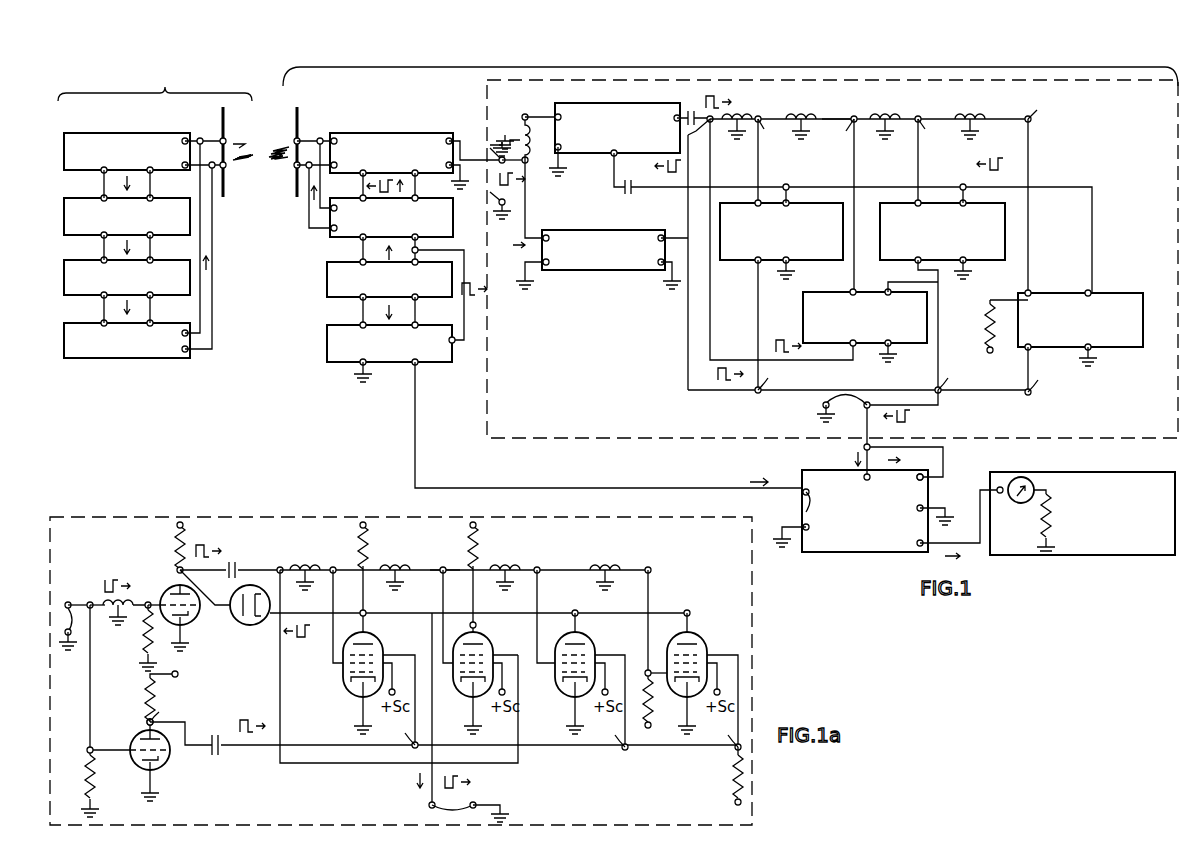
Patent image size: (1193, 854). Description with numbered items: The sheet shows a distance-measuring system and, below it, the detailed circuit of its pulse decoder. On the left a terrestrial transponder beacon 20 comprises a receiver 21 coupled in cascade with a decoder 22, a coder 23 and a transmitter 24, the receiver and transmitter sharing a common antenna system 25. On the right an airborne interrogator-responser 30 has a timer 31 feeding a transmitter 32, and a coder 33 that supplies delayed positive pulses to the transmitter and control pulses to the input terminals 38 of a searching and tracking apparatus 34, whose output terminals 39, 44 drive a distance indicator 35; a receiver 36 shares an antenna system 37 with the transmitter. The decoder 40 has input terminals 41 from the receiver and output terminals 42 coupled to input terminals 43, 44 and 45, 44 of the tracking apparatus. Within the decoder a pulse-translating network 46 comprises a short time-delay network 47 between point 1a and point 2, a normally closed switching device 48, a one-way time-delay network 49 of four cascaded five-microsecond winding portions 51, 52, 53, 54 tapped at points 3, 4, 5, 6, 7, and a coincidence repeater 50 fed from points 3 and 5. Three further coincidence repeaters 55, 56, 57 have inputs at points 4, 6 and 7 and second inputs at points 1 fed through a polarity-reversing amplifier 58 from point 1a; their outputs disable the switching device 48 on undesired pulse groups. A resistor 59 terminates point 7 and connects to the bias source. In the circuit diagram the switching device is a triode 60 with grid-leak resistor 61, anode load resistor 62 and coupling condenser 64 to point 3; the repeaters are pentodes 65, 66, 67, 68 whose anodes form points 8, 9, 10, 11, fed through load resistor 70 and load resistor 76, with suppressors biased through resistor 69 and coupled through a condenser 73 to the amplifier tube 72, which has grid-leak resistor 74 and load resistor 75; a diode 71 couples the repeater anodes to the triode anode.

In FIG. 1, the transponder beacon 20 is at (173, 202).
In FIG. 1, the receiver 21 is at (142, 132).
In FIG. 1, the decoder 22 is at (94, 198).
In FIG. 1, the coder 23 is at (94, 260).
In FIG. 1, the transmitter 24 is at (94, 323).
In FIG. 1, the antenna system 25 is at (226, 172).
In FIG. 1, the interrogator-responser 30 is at (730, 311).
In FIG. 1, the timer 31 is at (327, 278).
In FIG. 1, the transmitter 32 is at (360, 198).
In FIG. 1, the coder 33 is at (327, 347).
In FIG. 1, the searching and tracking apparatus 34 is at (804, 470).
In FIG. 1, the distance indicator 35 is at (1070, 472).
In FIG. 1, the receiver 36 is at (385, 133).
In FIG. 1, the antenna system 37 is at (289, 131).
In FIG. 1, the input terminals 38 is at (796, 510).
In FIG. 1, the output terminal 39 is at (922, 552).
In FIG. 1, the decoder 40 is at (484, 122).
In FIG. 1A, the decoder 40 is at (138, 517).
In FIG. 1, the input terminals 41 is at (492, 150).
In FIG. 1A, the input terminals 41 is at (64, 629).
In FIG. 1, the output terminals 42 is at (843, 413).
In FIG. 1A, the output terminals 42 is at (455, 808).
In FIG. 1, the input terminal 43 is at (924, 482).
In FIG. 1, the terminal 44 is at (924, 512).
In FIG. 1, the input terminal 45 is at (867, 477).
In FIG. 1, the pulse-translating network 46 is at (749, 98).
In FIG. 1A, the pulse-translating network 46 is at (322, 556).
In FIG. 1, the time-delay network 47 is at (520, 130).
In FIG. 1A, the time-delay network 47 is at (105, 610).
In FIG. 1, the switching device 48 is at (600, 104).
In FIG. 1A, the switching device 48 is at (198, 610).
In FIG. 1, the one-way time-delay network 49 is at (830, 117).
In FIG. 1A, the one-way time-delay network 49 is at (463, 580).
In FIG. 1, the coincidence repeater 50 is at (846, 284).
In FIG. 1A, the coincidence repeater 50 is at (500, 653).
In FIG. 1, the winding portion 51 is at (735, 118).
In FIG. 1A, the winding portion 51 is at (318, 555).
In FIG. 1, the winding portion 52 is at (812, 105).
In FIG. 1A, the winding portion 52 is at (400, 568).
In FIG. 1, the winding portion 53 is at (879, 117).
In FIG. 1A, the winding portion 53 is at (499, 568).
In FIG. 1, the winding portion 54 is at (980, 105).
In FIG. 1A, the winding portion 54 is at (600, 568).
In FIG. 1, the coincidence repeater 55 is at (748, 203).
In FIG. 1A, the coincidence repeater 55 is at (392, 655).
In FIG. 1, the coincidence repeater 56 is at (897, 203).
In FIG. 1A, the coincidence repeater 56 is at (591, 641).
In FIG. 1, the coincidence repeater 57 is at (1076, 287).
In FIG. 1A, the coincidence repeater 57 is at (711, 648).
In FIG. 1, the polarity-reversing amplifier 58 is at (603, 238).
In FIG. 1A, the polarity-reversing amplifier 58 is at (178, 746).
In FIG. 1, the resistor 59 is at (982, 339).
In FIG. 1A, the resistor 59 is at (650, 695).
In FIG. 1A, the triode 60 is at (170, 578).
In FIG. 1A, the grid-leak resistor 61 is at (159, 638).
In FIG. 1A, the anode load resistor 62 is at (177, 553).
In FIG. 1A, the coupling condenser 64 is at (234, 570).
In FIG. 1A, the pentode 65 is at (342, 686).
In FIG. 1A, the pentode 66 is at (449, 680).
In FIG. 1A, the pentode 67 is at (555, 690).
In FIG. 1A, the pentode 68 is at (663, 656).
In FIG. 1A, the resistor 69 is at (734, 776).
In FIG. 1A, the load resistor 70 is at (368, 557).
In FIG. 1A, the diode 71 is at (258, 625).
In FIG. 1A, the tube 72 is at (144, 715).
In FIG. 1A, the condenser 73 is at (212, 736).
In FIG. 1A, the grid-leak resistor 74 is at (110, 792).
In FIG. 1A, the load resistor 75 is at (148, 690).
In FIG. 1A, the load resistor 76 is at (467, 543).
In FIG. 1, the point 1 is at (901, 380).
In FIG. 1A, the point 1 is at (444, 725).
In FIG. 1, the point 1a is at (528, 162).
In FIG. 1A, the point 1a is at (90, 605).
In FIG. 1, the point 2 is at (531, 106).
In FIG. 1A, the point 2 is at (148, 605).
In FIG. 1, the point 3 is at (700, 130).
In FIG. 1A, the point 3 is at (280, 570).
In FIG. 1, the point 4 is at (764, 129).
In FIG. 1A, the point 4 is at (333, 568).
In FIG. 1, the point 5 is at (845, 130).
In FIG. 1A, the point 5 is at (443, 568).
In FIG. 1, the point 6 is at (925, 130).
In FIG. 1A, the point 6 is at (540, 569).
In FIG. 1, the point 7 is at (1037, 111).
In FIG. 1A, the point 7 is at (647, 568).
In FIG. 1A, the point 8 is at (365, 612).
In FIG. 1A, the point 9 is at (480, 620).
In FIG. 1A, the point 10 is at (574, 611).
In FIG. 1A, the point 11 is at (690, 615).